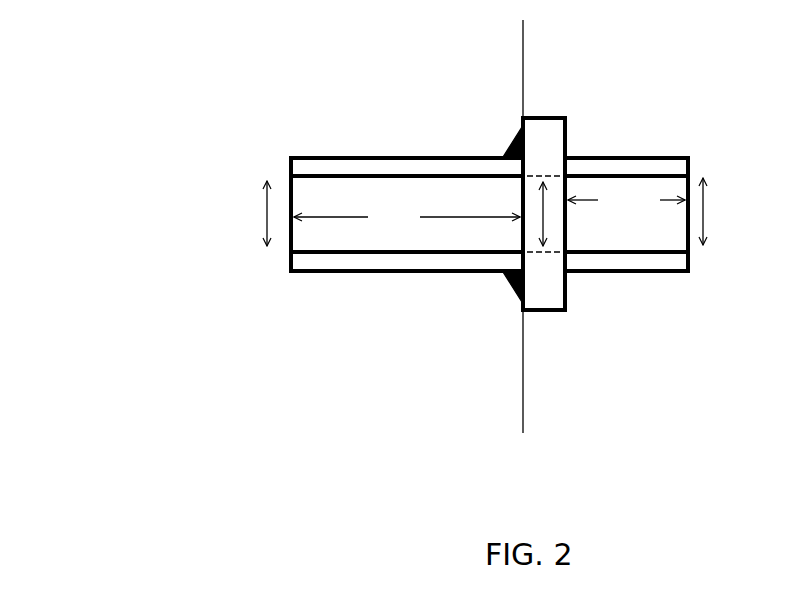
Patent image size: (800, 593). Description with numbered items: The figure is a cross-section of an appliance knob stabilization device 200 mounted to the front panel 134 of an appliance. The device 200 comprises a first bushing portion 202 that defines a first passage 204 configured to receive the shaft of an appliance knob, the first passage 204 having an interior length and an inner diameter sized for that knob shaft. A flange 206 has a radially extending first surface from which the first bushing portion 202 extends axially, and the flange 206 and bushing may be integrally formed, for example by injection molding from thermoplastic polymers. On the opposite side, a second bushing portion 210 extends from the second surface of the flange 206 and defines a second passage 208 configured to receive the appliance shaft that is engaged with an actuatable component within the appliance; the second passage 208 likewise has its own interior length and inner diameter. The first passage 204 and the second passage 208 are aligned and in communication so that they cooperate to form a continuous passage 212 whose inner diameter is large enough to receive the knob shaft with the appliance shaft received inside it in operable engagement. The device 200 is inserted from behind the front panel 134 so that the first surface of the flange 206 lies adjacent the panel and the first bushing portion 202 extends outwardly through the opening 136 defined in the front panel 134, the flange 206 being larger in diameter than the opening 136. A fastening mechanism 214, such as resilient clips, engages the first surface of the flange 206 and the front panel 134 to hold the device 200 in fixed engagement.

The appliance knob stabilization device 200 is at (138, 157).
The first bushing portion 202 is at (337, 272).
The first passage 204 is at (309, 241).
The flange 206 is at (540, 140).
The second passage 208 is at (585, 239).
The second bushing portion 210 is at (690, 272).
The continuous passage 212 is at (567, 285).
The fastening mechanism 214 is at (505, 145).
The front panel 134 is at (523, 96).
The opening 136 is at (503, 108).